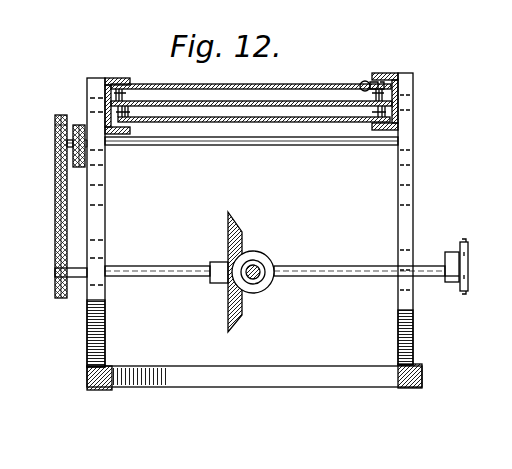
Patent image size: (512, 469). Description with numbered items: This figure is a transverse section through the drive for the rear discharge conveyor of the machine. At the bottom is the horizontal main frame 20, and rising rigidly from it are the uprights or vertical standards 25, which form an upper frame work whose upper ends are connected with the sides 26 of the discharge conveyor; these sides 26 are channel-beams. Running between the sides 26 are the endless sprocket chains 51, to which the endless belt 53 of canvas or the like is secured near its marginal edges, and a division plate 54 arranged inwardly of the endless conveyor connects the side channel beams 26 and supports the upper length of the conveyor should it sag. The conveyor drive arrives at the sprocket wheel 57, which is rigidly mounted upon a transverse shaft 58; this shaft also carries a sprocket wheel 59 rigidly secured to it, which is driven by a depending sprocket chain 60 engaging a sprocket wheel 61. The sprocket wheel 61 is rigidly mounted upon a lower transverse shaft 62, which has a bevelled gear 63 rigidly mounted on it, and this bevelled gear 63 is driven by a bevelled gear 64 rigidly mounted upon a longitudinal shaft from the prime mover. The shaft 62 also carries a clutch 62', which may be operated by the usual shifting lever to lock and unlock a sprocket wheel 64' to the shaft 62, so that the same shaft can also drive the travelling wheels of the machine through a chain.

The main frame 20 is at (87, 379).
The uprights or vertical standards 25 is at (36, 128).
The sides of discharge conveyor 26 is at (110, 78).
The endless sprocket chains 51 is at (363, 81).
The endless belt 53 is at (300, 78).
The division plate 54 is at (237, 101).
The sprocket wheel 57 is at (85, 156).
The transverse shaft 58 is at (305, 147).
The sprocket wheel 59 is at (55, 135).
The depending sprocket chain 60 is at (55, 218).
The sprocket wheel 61 is at (55, 278).
The lower transverse shaft 62 is at (275, 286).
The bevelled gear 63 is at (242, 322).
The bevelled gear 64 is at (258, 263).
The clutch 62' is at (441, 250).
The sprocket wheel 64' is at (469, 256).